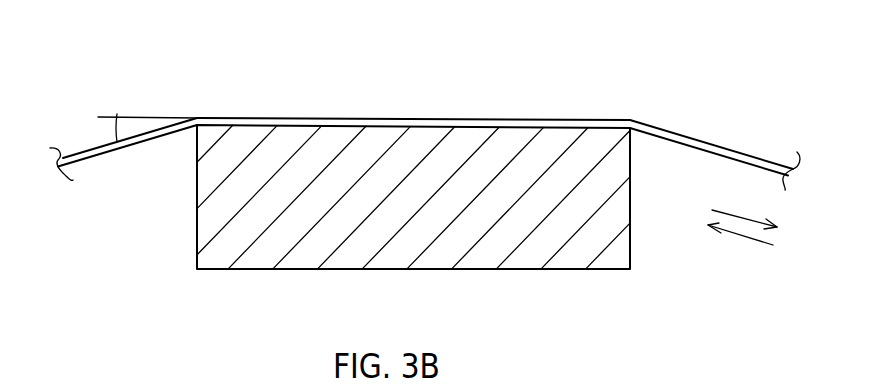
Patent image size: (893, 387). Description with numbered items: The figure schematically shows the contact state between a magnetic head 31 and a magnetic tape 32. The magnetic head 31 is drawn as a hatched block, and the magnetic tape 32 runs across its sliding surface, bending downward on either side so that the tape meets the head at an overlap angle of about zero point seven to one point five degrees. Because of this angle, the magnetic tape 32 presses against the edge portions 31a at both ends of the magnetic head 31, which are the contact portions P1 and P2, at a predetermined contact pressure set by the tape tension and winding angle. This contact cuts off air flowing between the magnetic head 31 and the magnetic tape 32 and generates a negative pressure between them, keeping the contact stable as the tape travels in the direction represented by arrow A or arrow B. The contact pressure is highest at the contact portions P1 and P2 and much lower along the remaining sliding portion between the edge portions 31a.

The magnetic head 31 is at (602, 228).
The edge portions 31a is at (192, 130).
The magnetic tape 32 is at (682, 136).
The contact portion P1 is at (197, 117).
The contact portion P2 is at (630, 119).
The arrow A is at (740, 215).
The arrow B is at (742, 238).